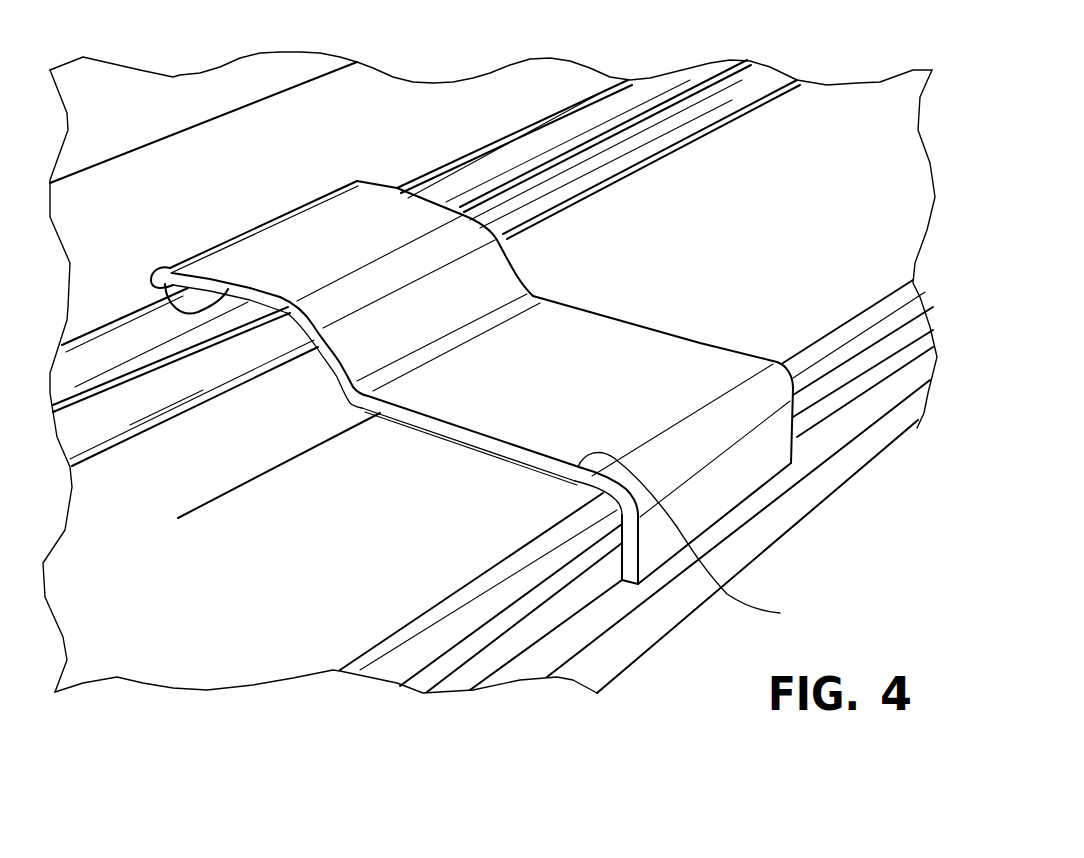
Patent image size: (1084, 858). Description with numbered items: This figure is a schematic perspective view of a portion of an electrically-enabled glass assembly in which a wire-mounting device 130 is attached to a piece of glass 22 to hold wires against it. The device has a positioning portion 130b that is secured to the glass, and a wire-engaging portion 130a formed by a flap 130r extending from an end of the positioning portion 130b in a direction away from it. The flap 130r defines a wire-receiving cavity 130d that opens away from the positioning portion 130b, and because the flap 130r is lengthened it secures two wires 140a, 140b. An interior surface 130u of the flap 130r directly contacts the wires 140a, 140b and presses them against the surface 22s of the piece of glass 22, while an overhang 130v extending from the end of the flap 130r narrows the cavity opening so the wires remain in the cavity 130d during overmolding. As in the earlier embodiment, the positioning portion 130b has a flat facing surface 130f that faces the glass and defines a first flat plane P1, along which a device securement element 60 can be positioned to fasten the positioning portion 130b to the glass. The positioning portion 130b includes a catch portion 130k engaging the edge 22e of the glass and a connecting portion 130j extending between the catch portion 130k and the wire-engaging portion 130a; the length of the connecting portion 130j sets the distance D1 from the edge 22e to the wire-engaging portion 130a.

The piece of glass 22 is at (877, 184).
The surface of the piece of glass 22s is at (800, 172).
The edge of the piece of glass 22e is at (870, 308).
The wire-mounting device securement element 60 is at (403, 427).
The wire-mounting device 130 is at (493, 346).
The wire-engaging portion 130a is at (347, 199).
The positioning portion 130b is at (516, 421).
The wire-receiving cavity 130d is at (313, 357).
The flat facing surface 130f is at (553, 479).
The clip foot top surface 130j is at (600, 363).
The clip edge flange 130k is at (753, 470).
The flap 130r is at (368, 203).
The interior surface of the flap 130u is at (160, 293).
The overhang 130v is at (163, 270).
The wire 140a is at (573, 168).
The wire 140b is at (490, 168).
The distance D1 is at (477, 576).
The first flat plane P1 is at (694, 538).